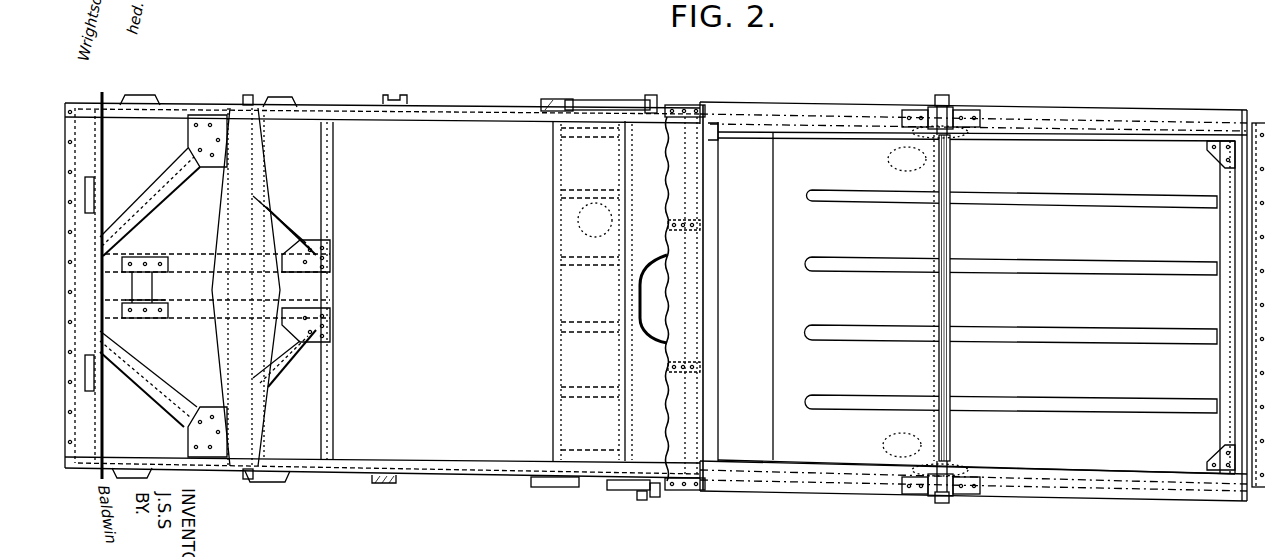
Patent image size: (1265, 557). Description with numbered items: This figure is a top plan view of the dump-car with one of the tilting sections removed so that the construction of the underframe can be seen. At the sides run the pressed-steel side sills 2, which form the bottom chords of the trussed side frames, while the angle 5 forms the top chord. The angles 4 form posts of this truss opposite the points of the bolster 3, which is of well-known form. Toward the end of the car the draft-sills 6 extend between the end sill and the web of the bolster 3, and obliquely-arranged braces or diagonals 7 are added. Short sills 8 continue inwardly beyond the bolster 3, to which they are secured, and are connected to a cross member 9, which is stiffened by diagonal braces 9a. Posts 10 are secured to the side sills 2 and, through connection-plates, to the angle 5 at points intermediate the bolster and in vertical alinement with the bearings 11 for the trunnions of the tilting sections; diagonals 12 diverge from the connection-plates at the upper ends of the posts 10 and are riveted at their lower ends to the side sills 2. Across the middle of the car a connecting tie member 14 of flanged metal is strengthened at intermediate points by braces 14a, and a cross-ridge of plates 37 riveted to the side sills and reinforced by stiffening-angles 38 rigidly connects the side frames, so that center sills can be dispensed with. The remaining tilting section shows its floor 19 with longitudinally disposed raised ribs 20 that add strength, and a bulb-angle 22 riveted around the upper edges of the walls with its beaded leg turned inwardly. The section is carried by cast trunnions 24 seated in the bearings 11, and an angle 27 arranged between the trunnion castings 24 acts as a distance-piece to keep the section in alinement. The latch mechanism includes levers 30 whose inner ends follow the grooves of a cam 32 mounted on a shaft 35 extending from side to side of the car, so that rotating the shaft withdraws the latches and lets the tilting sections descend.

The side sills 2 is at (373, 461).
The bolster 3 is at (229, 469).
The angles 4 is at (246, 100).
The angle 5 is at (837, 107).
The draft-sills 6 is at (109, 263).
The braces or diagonals 7 is at (163, 286).
The short sills 8 is at (283, 312).
The cross member 9 is at (325, 371).
The diagonal braces 9a is at (290, 225).
The posts 10 is at (403, 104).
The bearings 11 is at (967, 107).
The diagonals 12 is at (283, 100).
The connecting tie member 14 is at (672, 297).
The braces 14a is at (705, 224).
The floor 19 is at (869, 292).
The raised ribs 20 is at (1128, 205).
The bulb-angle 22 is at (1087, 130).
The cast trunnions 24 is at (924, 138).
The angle 27 is at (950, 173).
The levers 30 is at (625, 101).
The cam 32 is at (660, 103).
The shaft 35 is at (644, 500).
The plates 37 is at (592, 291).
The stiffening-angles 38 is at (605, 196).